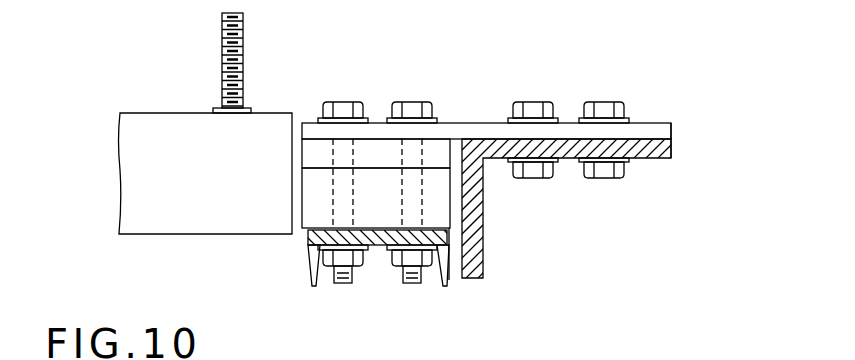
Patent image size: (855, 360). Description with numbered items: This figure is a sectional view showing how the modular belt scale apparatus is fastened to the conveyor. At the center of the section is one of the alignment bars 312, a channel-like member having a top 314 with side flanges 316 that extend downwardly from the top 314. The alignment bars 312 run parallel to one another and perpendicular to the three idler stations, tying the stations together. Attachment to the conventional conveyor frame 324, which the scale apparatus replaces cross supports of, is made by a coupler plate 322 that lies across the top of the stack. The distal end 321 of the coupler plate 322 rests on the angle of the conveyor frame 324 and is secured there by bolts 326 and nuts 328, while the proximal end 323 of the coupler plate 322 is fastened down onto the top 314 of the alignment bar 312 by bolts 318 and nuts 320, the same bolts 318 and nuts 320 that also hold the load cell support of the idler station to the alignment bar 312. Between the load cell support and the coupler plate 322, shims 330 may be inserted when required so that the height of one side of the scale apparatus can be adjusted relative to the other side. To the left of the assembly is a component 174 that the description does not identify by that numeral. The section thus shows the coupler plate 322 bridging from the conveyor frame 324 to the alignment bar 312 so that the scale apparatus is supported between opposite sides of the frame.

The housing block 174 is at (125, 148).
The alignment bar 312 is at (462, 258).
The top 314 is at (317, 229).
The side flanges 316 is at (310, 283).
The bolts 318 is at (418, 102).
The nuts 320 is at (392, 268).
The distal ends 321 is at (670, 123).
The coupler plates 322 is at (531, 183).
The proximal ends 323 is at (310, 122).
The conveyor frame 324 is at (484, 226).
The bolts 326 is at (597, 102).
The nuts 328 is at (607, 178).
The shims 330 is at (315, 152).